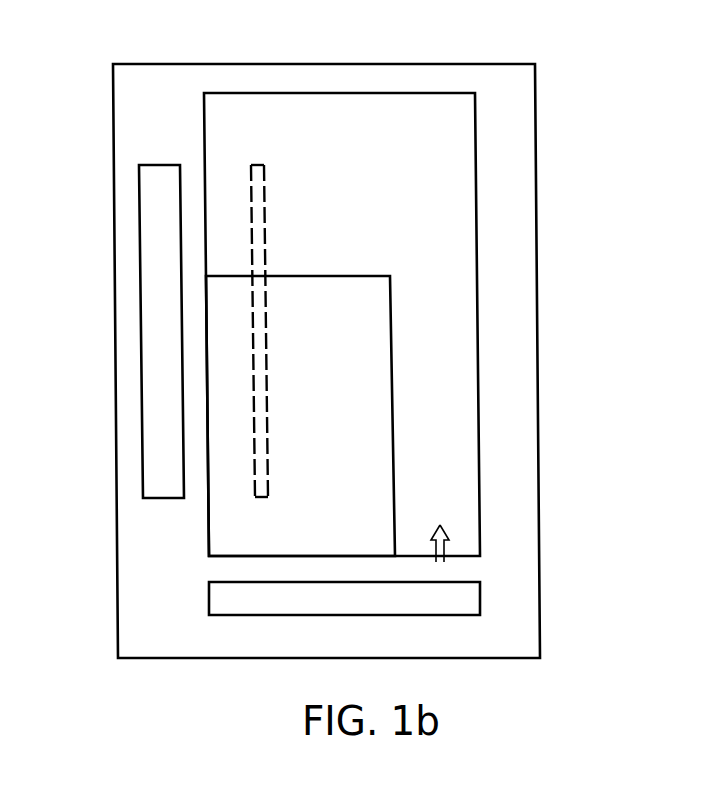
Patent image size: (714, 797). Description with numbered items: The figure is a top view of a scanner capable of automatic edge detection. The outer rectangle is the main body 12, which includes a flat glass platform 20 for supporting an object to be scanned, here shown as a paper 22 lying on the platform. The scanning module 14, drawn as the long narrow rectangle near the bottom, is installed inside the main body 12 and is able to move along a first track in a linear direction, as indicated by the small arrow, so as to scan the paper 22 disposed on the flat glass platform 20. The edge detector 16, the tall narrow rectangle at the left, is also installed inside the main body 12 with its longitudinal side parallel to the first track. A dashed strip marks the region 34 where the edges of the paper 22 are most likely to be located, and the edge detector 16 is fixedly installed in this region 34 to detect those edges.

The main body 12 is at (515, 503).
The scanning module 14 is at (473, 596).
The edge detector 16 is at (152, 274).
The flat glass platform 20 is at (442, 174).
The paper 22 is at (360, 383).
The region 34 is at (252, 163).